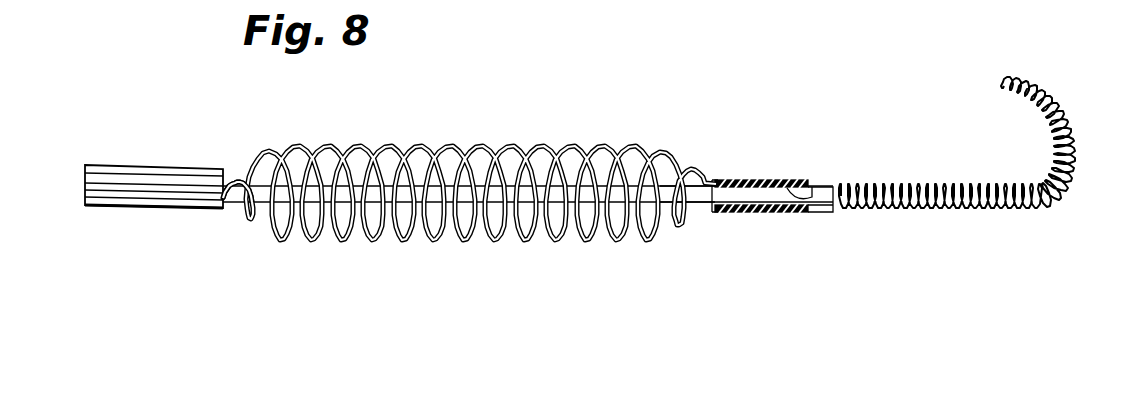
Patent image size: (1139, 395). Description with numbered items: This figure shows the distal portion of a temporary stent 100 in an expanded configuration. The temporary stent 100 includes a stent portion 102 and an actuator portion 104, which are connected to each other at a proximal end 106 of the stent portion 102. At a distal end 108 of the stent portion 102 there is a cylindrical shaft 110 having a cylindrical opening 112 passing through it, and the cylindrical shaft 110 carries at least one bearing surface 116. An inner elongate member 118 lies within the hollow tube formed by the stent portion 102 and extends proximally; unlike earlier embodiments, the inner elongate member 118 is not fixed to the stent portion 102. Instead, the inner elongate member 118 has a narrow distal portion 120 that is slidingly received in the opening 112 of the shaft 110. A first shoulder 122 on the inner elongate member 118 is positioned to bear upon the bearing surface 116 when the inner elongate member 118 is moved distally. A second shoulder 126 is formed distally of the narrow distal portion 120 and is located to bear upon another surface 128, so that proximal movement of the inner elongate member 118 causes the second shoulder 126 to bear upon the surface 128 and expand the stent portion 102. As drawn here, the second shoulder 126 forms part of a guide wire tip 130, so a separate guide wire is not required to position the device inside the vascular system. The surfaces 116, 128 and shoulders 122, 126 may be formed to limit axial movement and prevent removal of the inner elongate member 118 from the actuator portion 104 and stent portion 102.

The temporary stent 100 is at (668, 106).
The stent portion 102 is at (506, 133).
The actuator portion 104 is at (140, 214).
The proximal end 106 is at (222, 222).
The distal end 108 is at (807, 219).
The cylindrical shaft 110 is at (775, 180).
The cylindrical opening 112 is at (815, 186).
The bearing surface 116 is at (712, 180).
The inner elongate member 118 is at (440, 172).
The narrow distal portion 120 is at (678, 205).
The first shoulder 122 is at (628, 205).
The second shoulder 126 is at (820, 214).
The surface 128 is at (812, 216).
The guide wire tip 130 is at (989, 215).